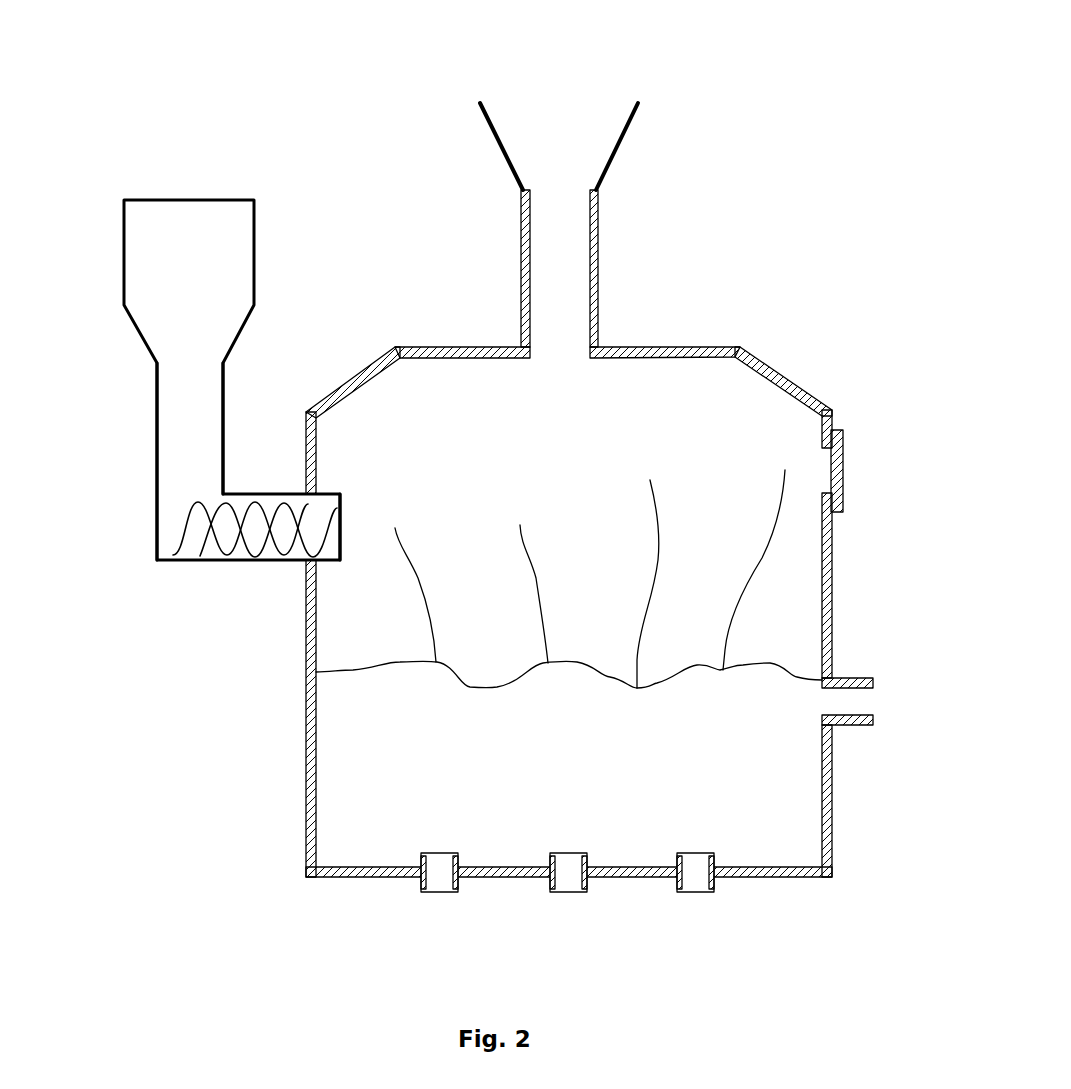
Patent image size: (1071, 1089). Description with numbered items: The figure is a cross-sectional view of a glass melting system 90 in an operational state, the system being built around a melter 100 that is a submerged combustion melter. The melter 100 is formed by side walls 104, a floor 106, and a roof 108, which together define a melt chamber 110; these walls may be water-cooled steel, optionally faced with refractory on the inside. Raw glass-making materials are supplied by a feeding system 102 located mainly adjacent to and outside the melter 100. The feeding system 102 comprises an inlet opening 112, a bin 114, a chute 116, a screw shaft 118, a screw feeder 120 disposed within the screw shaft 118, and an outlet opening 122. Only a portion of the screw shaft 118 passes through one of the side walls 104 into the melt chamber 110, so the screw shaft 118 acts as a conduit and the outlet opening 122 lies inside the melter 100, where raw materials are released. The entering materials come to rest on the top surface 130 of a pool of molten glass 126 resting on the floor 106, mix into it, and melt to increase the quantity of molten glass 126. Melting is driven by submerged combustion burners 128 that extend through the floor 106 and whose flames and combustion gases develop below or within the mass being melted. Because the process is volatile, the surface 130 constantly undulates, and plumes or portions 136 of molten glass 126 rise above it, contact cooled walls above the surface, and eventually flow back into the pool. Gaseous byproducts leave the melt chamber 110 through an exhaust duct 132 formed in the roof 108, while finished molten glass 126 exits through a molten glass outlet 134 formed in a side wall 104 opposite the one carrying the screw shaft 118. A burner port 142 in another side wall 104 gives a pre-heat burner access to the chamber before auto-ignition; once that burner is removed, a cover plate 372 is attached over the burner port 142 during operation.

The melter 100 is at (222, 319).
The glass melting system 90 is at (585, 516).
The feeding system 102 is at (112, 497).
The side walls 104 is at (305, 766).
The floor 106 is at (762, 880).
The roof 108 is at (712, 348).
The melt chamber 110 is at (592, 497).
The inlet opening 112 is at (185, 200).
The bin 114 is at (212, 284).
The chute 116 is at (208, 408).
The screw shaft 118 is at (242, 494).
The screw feeder 120 is at (215, 548).
The outlet opening 122 is at (340, 517).
The molten glass 126 is at (592, 792).
The submerged combustion burners 128 is at (448, 892).
The top surface 130 is at (448, 680).
The exhaust duct 132 is at (578, 262).
The molten glass outlet 134 is at (860, 700).
The plumes or portions 136 is at (412, 558).
The burner port 142 is at (800, 455).
The cover plate 372 is at (843, 460).